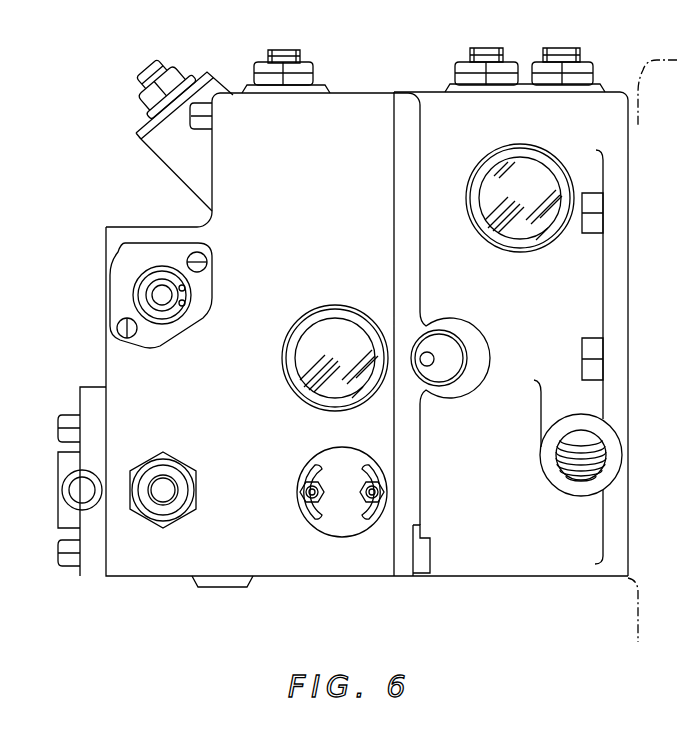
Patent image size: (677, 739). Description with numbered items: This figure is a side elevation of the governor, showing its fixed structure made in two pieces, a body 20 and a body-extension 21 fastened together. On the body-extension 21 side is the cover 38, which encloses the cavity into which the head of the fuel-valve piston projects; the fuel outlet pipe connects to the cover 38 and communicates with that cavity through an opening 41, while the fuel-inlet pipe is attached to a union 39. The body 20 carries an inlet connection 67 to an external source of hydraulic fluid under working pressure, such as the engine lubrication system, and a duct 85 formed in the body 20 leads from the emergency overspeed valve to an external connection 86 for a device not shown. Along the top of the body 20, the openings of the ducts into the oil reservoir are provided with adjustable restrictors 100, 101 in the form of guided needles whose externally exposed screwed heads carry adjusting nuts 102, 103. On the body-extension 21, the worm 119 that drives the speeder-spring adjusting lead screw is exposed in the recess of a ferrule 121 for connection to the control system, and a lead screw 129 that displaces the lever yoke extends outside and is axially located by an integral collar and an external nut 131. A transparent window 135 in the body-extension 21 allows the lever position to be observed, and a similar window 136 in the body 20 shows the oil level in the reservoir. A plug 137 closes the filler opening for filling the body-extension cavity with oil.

The body 20 is at (590, 280).
The body-extension 21 is at (243, 204).
The cover 38 is at (65, 462).
The union 39 is at (183, 488).
The opening 41 is at (82, 495).
The inlet connection 67 is at (600, 443).
The duct 85 is at (430, 360).
The external connection 86 is at (465, 367).
The adjustable restrictor 100 is at (572, 53).
The adjustable restrictor 101 is at (495, 57).
The adjusting nut 102 is at (580, 70).
The adjusting nut 103 is at (468, 67).
The worm 119 is at (167, 297).
The ferrule 121 is at (205, 278).
The lead screw 129 is at (268, 53).
The external nut 131 is at (302, 72).
The transparent window 135 is at (322, 387).
The window 136 is at (527, 218).
The plug 137 is at (173, 77).